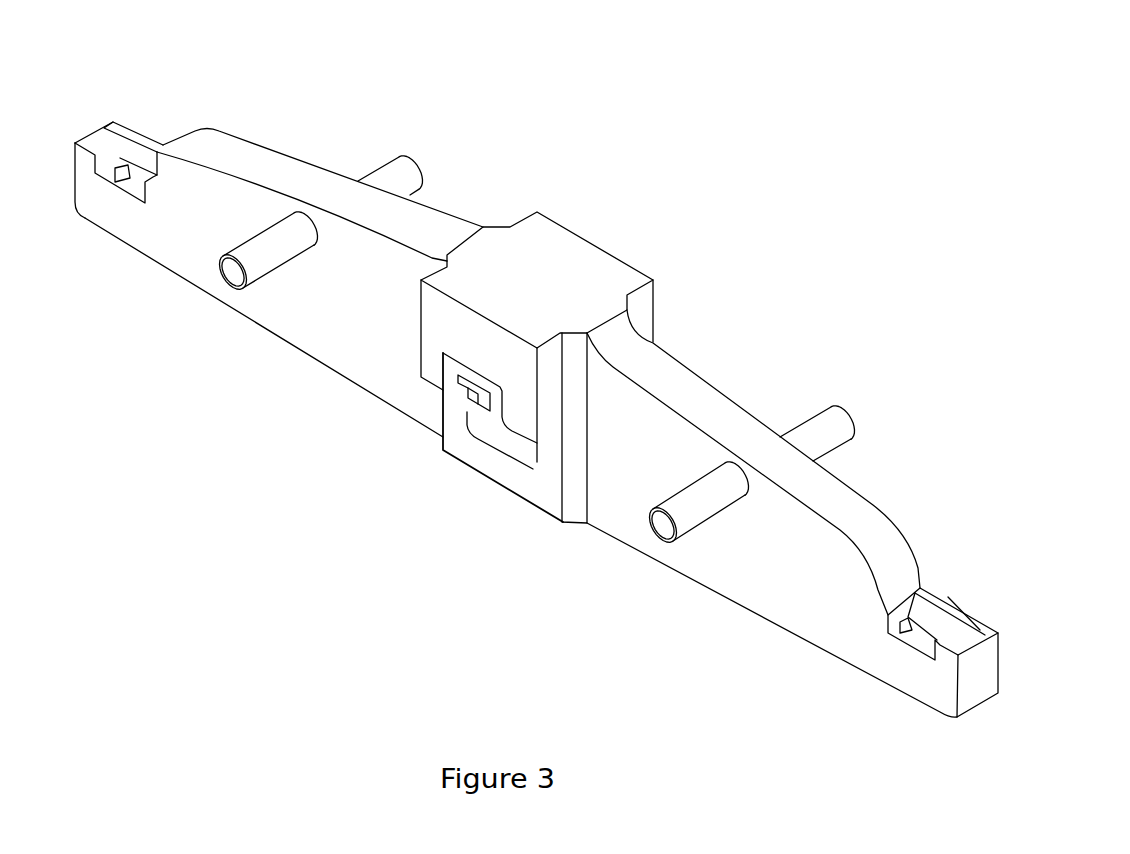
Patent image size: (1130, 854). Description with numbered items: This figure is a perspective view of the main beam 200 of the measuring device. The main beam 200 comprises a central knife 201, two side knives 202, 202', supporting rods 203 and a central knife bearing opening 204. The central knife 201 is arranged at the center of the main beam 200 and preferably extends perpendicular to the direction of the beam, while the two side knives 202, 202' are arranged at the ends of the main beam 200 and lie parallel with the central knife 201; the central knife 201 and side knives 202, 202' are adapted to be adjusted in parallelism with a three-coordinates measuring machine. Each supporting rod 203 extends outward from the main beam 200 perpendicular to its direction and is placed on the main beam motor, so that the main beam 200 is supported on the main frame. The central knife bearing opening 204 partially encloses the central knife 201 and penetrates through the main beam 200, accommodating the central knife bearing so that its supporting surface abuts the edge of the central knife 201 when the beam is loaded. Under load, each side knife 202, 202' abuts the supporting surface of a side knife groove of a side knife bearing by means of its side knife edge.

The main beam 200 is at (537, 275).
The central knife 201 is at (472, 395).
The side knife 202 is at (161, 135).
The side knife 202' is at (999, 628).
The supporting rod 203 is at (402, 173).
The central knife bearing opening 204 is at (505, 437).